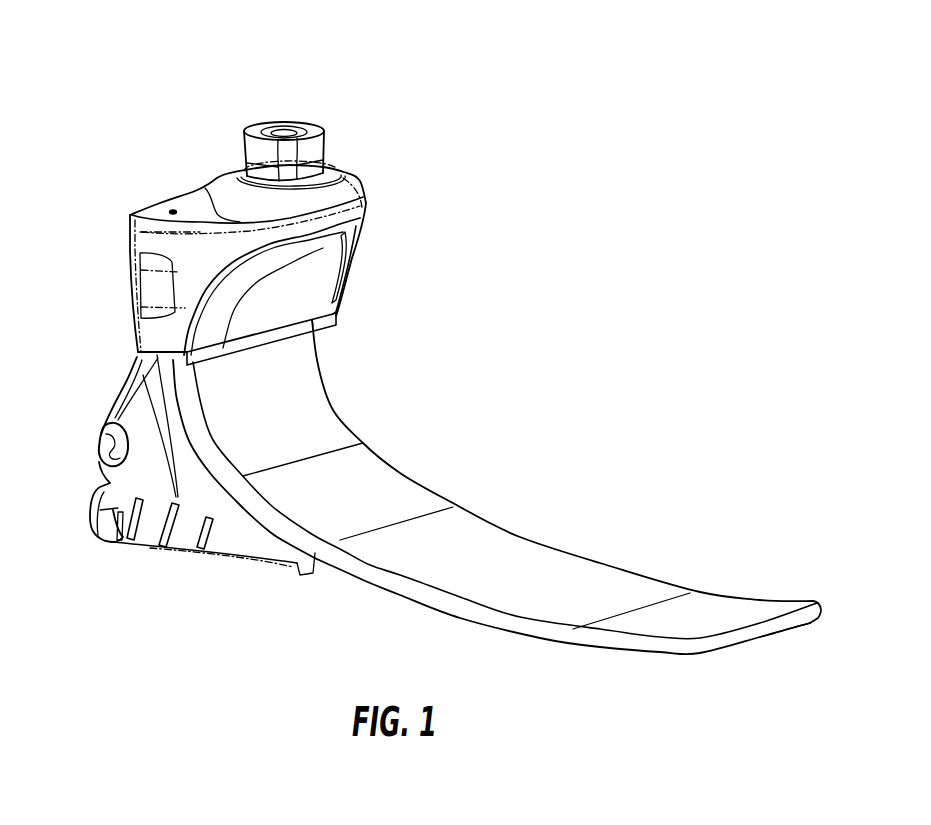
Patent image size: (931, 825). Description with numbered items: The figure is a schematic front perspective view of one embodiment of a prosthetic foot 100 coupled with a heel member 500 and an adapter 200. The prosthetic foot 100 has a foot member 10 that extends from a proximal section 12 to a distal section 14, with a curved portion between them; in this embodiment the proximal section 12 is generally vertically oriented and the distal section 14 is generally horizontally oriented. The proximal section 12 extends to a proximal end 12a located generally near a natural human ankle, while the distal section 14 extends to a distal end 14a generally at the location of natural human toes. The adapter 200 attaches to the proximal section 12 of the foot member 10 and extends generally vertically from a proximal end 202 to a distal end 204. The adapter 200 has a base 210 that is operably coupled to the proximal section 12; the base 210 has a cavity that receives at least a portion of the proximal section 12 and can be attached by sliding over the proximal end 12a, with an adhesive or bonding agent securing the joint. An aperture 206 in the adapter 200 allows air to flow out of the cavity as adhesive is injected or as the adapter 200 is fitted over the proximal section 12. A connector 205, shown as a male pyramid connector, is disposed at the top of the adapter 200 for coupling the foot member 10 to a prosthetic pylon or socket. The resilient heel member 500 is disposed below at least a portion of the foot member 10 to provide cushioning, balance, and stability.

The prosthetic foot 100 is at (572, 358).
The foot member 10 is at (493, 511).
The distal section 14 is at (790, 598).
The distal end 14a is at (808, 629).
The proximal section 12 is at (120, 328).
The proximal end 12a is at (149, 202).
The adapter 200 is at (351, 245).
The proximal end 202 is at (362, 180).
The distal end 204 is at (325, 324).
The connector 205 is at (317, 112).
The aperture 206 is at (173, 209).
The base 210 is at (178, 251).
The heel member 500 is at (89, 539).